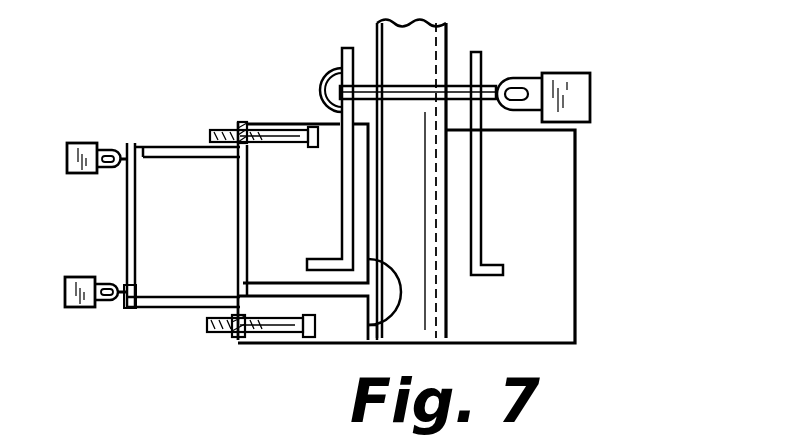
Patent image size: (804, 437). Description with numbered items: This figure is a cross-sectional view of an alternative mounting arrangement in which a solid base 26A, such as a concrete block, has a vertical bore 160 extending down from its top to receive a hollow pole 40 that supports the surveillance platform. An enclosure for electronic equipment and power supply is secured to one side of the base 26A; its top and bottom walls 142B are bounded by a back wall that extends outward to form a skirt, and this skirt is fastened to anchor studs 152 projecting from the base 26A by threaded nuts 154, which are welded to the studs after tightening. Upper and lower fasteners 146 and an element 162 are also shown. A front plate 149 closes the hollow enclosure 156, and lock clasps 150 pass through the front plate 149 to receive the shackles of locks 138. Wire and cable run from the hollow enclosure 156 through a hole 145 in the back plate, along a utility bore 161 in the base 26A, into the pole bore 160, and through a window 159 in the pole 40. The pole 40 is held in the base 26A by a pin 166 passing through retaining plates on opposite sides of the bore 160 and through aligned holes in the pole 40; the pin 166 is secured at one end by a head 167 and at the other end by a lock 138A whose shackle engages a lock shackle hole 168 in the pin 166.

The hollow pole 40 is at (377, 43).
The vertical bore 160 is at (440, 306).
The base 26A is at (541, 219).
The pin 166 is at (409, 86).
The head 167 is at (321, 90).
The bracket arm 162 is at (474, 52).
The lock shackle hole 168 is at (505, 77).
The lock 138A is at (592, 98).
The utility bore 161 is at (268, 282).
The window 159 is at (398, 255).
The hole in the back plate 145 is at (234, 295).
The hollow enclosure 156 is at (201, 245).
The front plate 149 is at (127, 227).
The top and bottom walls 142B is at (182, 158).
The upper bolt 146 is at (252, 124).
The anchor studs 152 is at (288, 334).
The threaded nuts 154 is at (236, 334).
The locks 138 is at (82, 143).
The lock clasps 150 is at (125, 290).